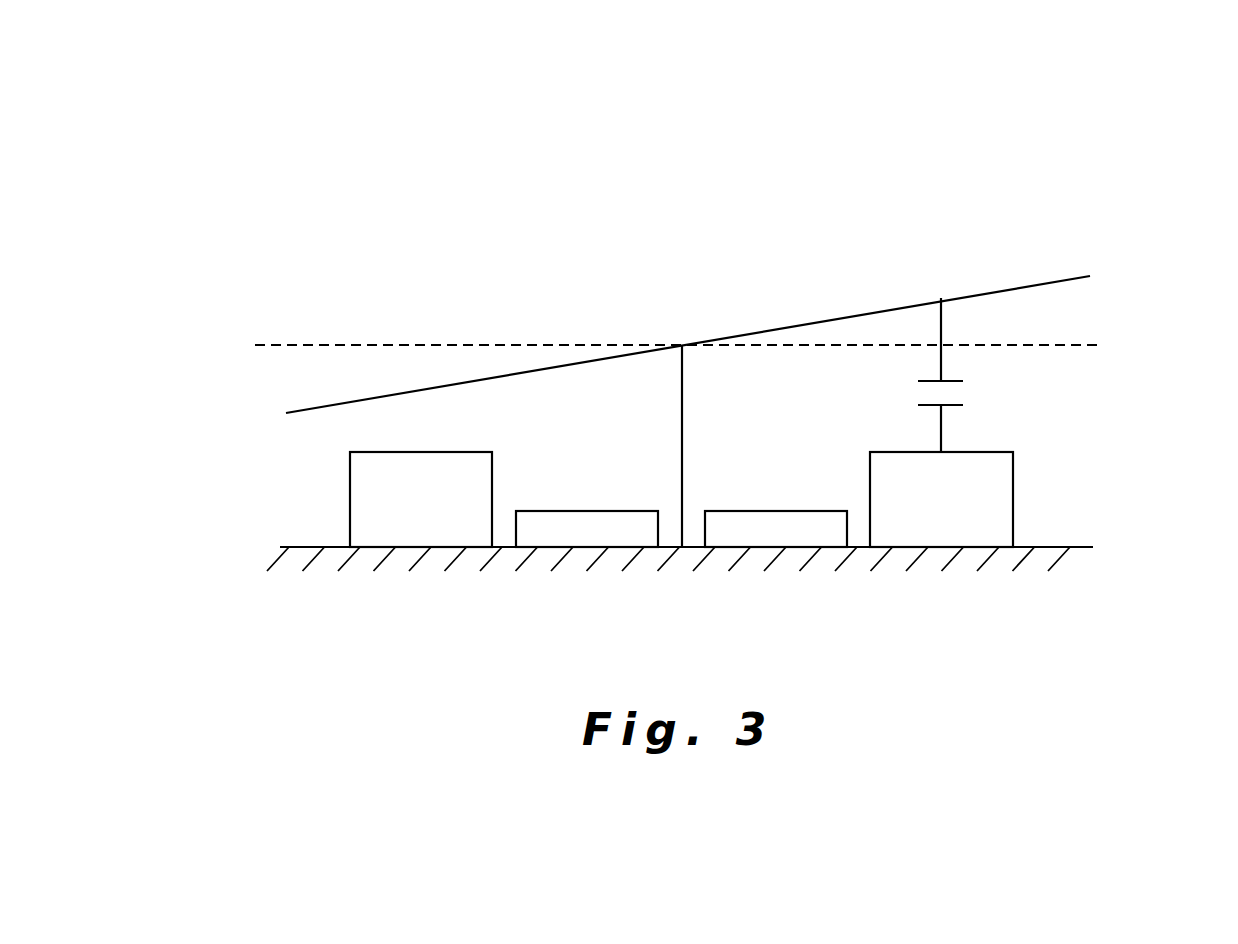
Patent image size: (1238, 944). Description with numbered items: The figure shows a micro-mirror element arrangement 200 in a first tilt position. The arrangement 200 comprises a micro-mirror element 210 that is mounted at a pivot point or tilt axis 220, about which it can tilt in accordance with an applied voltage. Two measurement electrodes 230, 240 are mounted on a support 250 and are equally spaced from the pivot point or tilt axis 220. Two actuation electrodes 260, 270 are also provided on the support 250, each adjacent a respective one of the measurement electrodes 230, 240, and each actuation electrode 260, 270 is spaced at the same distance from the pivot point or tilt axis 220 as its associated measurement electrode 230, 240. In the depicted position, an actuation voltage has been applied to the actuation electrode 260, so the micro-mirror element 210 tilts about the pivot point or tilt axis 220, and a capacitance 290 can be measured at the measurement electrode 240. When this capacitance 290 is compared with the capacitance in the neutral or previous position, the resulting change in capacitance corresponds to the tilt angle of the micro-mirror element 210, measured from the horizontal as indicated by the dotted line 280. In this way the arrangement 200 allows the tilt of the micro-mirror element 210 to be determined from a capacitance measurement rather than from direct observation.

The micro-mirror element arrangement 200 is at (810, 143).
The micro-mirror element 210 is at (409, 377).
The pivot point or tilt axis 220 is at (693, 336).
The measurement electrode 230 is at (348, 517).
The measurement electrode 240 is at (1001, 514).
The support 250 is at (560, 554).
The actuation electrode 260 is at (600, 498).
The actuation electrode 270 is at (787, 530).
The dotted line 280 is at (269, 334).
The capacitance 290 is at (977, 381).